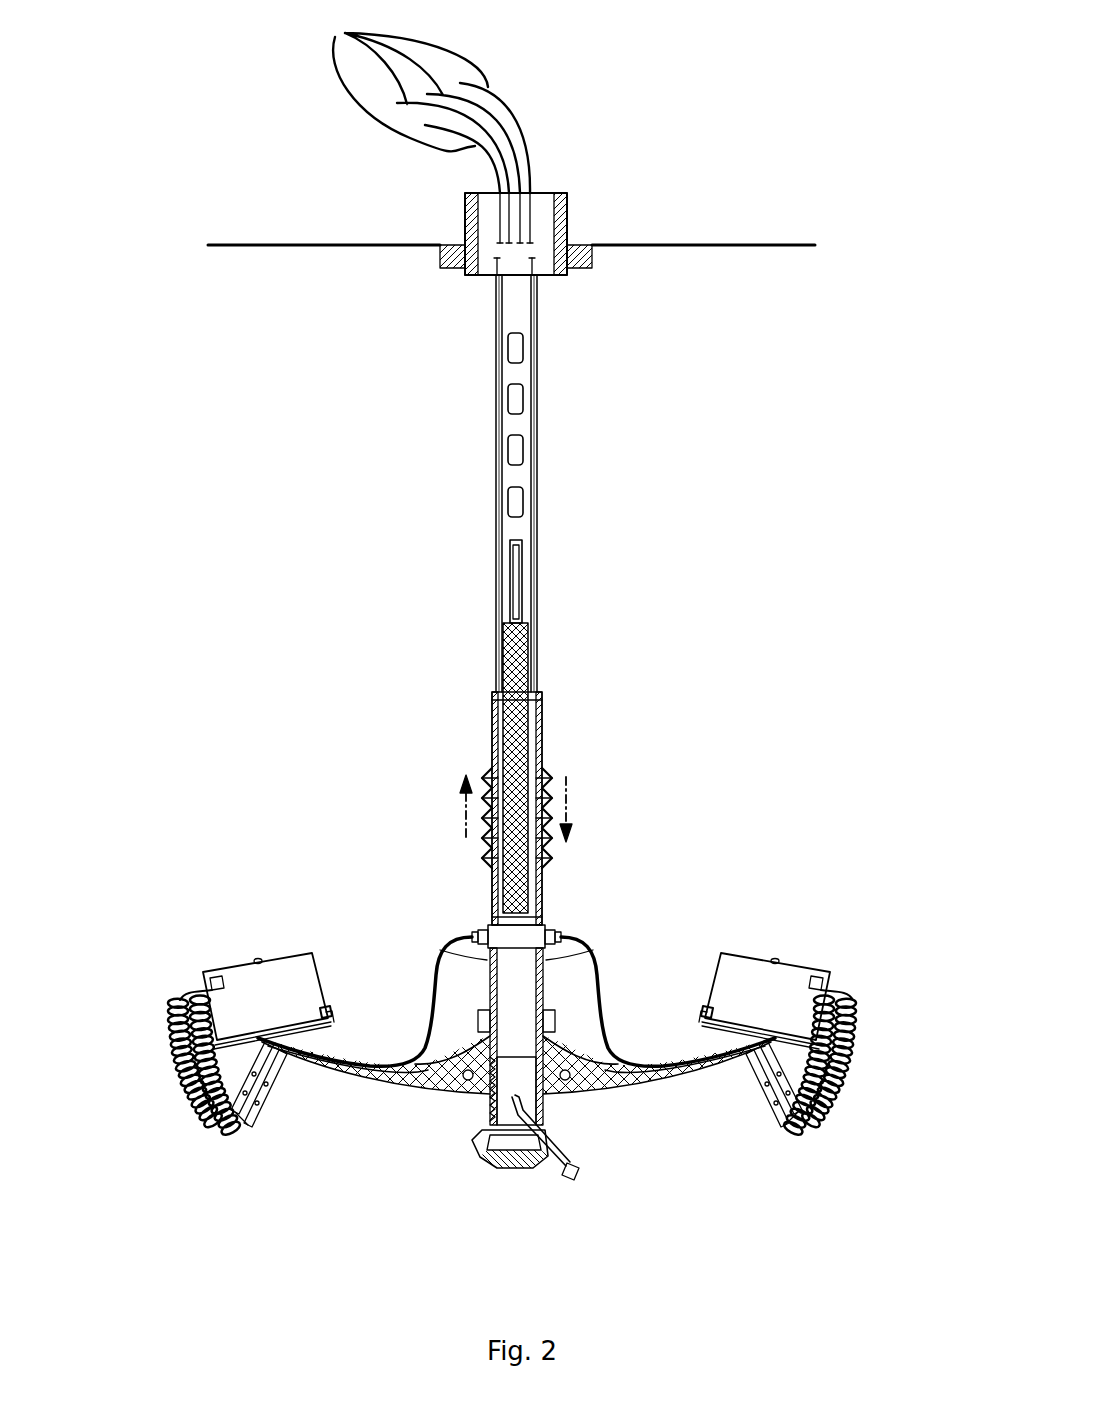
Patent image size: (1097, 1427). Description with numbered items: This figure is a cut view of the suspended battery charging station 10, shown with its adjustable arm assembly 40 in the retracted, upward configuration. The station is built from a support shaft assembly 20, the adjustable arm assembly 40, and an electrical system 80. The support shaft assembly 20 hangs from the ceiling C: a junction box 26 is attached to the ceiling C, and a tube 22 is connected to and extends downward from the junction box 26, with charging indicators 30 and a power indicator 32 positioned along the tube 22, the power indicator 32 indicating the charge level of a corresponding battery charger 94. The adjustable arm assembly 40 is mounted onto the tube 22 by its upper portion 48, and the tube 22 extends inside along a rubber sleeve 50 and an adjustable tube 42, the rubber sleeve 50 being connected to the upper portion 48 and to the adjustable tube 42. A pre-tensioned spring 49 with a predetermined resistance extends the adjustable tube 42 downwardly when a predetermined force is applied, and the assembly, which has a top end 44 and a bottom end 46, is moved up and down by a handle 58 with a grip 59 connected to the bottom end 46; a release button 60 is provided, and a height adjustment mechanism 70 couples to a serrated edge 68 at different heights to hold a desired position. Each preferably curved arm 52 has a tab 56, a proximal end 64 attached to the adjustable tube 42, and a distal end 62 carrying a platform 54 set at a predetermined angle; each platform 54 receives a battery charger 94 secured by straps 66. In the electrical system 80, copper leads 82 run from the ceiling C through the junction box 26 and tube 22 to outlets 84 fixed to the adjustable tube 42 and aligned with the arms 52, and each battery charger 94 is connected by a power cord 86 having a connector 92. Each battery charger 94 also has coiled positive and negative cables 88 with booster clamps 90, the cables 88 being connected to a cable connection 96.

The suspended battery charging station 10 is at (853, 104).
The support shaft assembly 20 is at (603, 427).
The tube 22 is at (537, 305).
The junction box 26 is at (568, 225).
The charging indicators 30 is at (507, 497).
The power indicator 32 is at (518, 562).
The adjustable arm assembly 40 is at (446, 754).
The adjustable tube 42 is at (473, 937).
The top end 44 is at (541, 690).
The bottom end 46 is at (490, 1115).
The upper portion 48 is at (490, 733).
The spring 49 is at (500, 672).
The rubber sleeve 50 is at (542, 777).
The arm 52 is at (375, 1086).
The platform 54 is at (332, 1018).
The tab 56 is at (292, 1065).
The handle 58 is at (480, 1140).
The grip 59 is at (525, 1168).
The release button 60 is at (568, 1182).
The distal end 62 is at (296, 1042).
The proximal end 64 is at (433, 1087).
The straps 66 is at (256, 960).
The serrated edge 68 is at (493, 1110).
The height adjustment mechanism 70 is at (545, 1105).
The electrical system 80 is at (568, 104).
The lead 82 is at (346, 33).
The outlet 84 is at (484, 921).
The power cord 86 is at (428, 990).
The positive and negative cables 88 is at (177, 1067).
The booster clamps 90 is at (262, 1104).
The connector 92 is at (490, 926).
The battery charger 94 is at (218, 972).
The cable connection 96 is at (212, 976).
The ceiling C is at (278, 243).